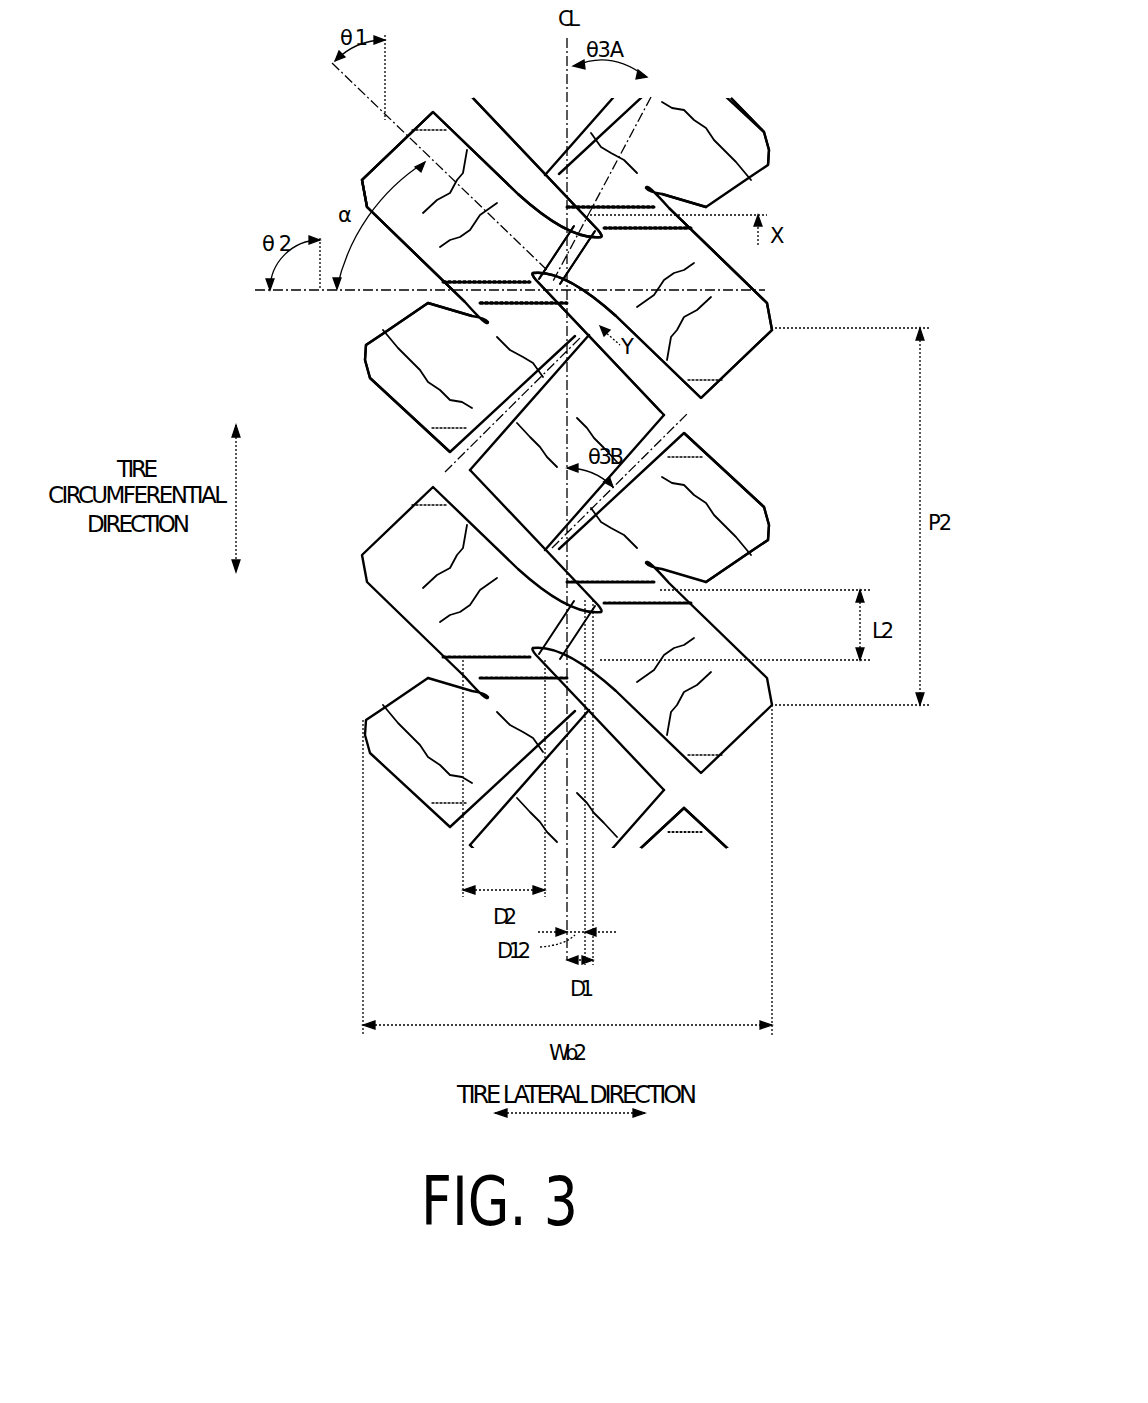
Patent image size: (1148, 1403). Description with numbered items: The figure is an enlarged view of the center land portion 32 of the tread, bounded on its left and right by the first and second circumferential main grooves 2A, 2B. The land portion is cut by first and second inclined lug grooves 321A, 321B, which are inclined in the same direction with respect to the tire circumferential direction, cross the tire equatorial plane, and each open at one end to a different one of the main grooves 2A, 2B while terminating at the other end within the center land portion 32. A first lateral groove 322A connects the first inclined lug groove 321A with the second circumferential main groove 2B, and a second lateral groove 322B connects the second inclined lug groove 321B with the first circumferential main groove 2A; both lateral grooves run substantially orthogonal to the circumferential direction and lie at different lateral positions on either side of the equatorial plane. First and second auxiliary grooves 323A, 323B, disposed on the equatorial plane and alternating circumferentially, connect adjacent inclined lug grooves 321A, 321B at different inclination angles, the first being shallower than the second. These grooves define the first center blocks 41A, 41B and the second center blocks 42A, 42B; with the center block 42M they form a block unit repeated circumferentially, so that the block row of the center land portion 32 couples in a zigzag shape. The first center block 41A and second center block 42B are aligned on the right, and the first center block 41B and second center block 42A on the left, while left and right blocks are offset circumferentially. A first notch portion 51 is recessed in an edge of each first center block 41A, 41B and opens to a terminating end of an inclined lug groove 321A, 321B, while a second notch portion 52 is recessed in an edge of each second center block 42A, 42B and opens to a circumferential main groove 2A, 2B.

The first circumferential main groove 2A is at (350, 190).
The second circumferential main groove 2B is at (790, 160).
The center land portion 32 is at (774, 78).
The first center block 41A is at (760, 735).
The first center block 41B is at (377, 527).
The second center block 42A is at (357, 712).
The second center block 42B is at (781, 520).
The center block 42M is at (654, 816).
The first notch portion 51 is at (767, 707).
The second notch portion 52 is at (495, 660).
The first inclined lug groove 321A is at (465, 462).
The second inclined lug groove 321B is at (640, 355).
The first lateral groove 322A is at (673, 593).
The second lateral groove 322B is at (490, 640).
The first auxiliary groove 323A is at (470, 560).
The second auxiliary groove 323B is at (662, 433).